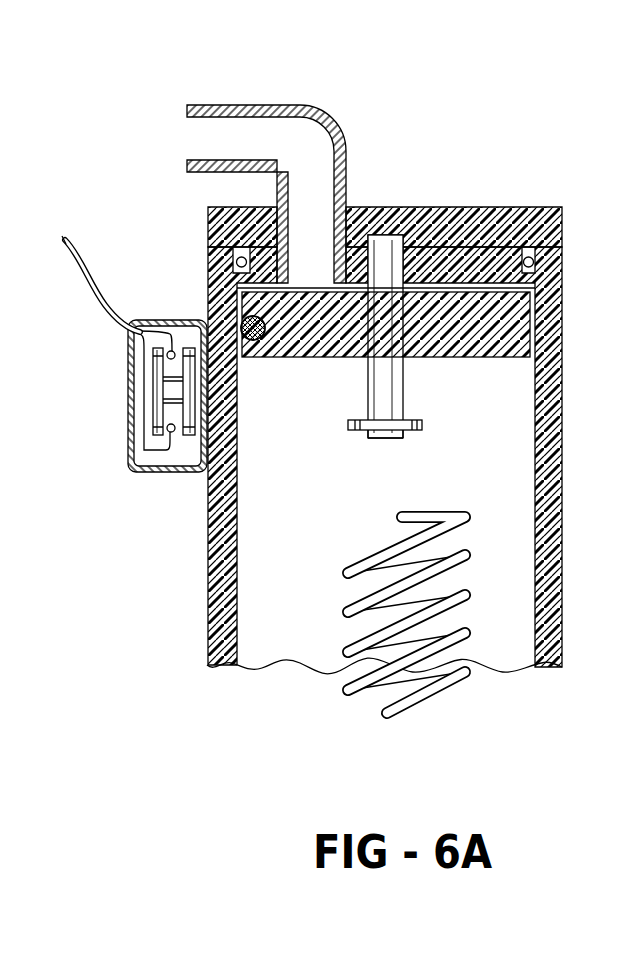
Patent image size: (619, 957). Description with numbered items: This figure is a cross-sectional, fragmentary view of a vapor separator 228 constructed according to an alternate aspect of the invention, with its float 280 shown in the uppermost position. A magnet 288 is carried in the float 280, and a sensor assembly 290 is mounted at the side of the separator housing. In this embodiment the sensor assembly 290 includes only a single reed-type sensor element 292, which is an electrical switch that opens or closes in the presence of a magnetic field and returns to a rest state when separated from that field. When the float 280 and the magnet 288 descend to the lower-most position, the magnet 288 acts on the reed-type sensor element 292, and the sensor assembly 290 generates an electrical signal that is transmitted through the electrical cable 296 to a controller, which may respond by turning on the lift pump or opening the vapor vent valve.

The vapor separator 228 is at (140, 107).
The float 280 is at (481, 333).
The magnet 288 is at (262, 355).
The sensor assembly 290 is at (126, 471).
The reed-type sensor element 292 is at (153, 390).
The electrical cable 296 is at (68, 232).